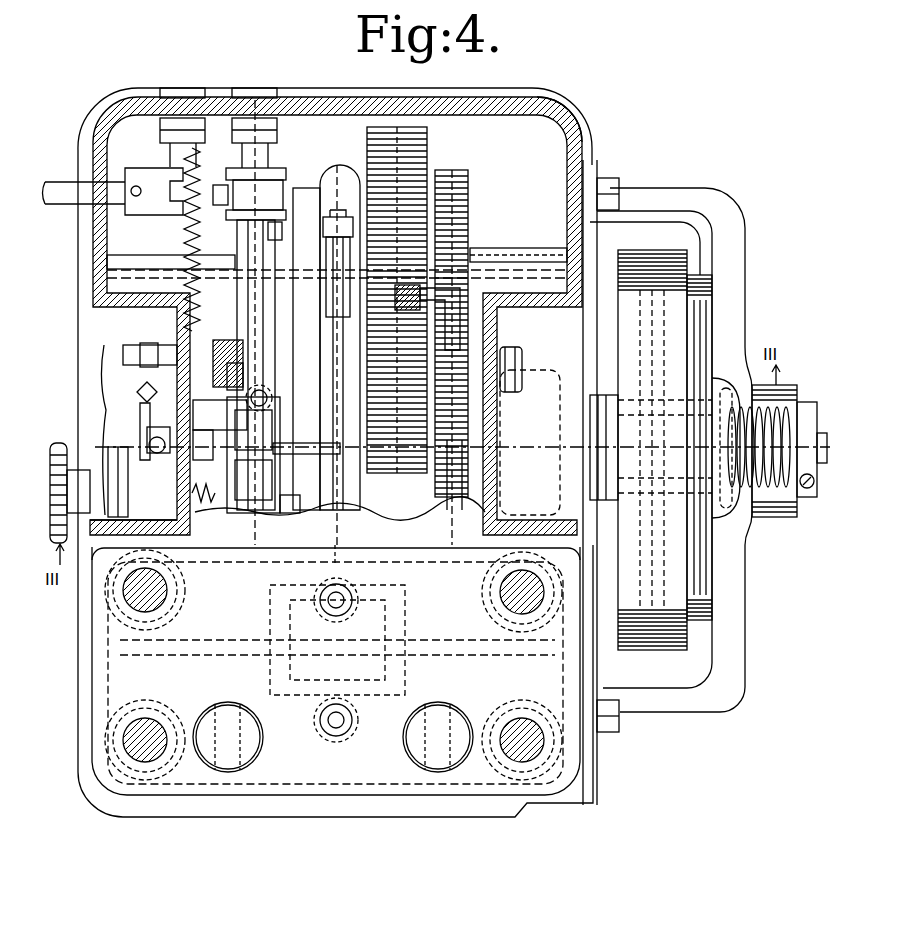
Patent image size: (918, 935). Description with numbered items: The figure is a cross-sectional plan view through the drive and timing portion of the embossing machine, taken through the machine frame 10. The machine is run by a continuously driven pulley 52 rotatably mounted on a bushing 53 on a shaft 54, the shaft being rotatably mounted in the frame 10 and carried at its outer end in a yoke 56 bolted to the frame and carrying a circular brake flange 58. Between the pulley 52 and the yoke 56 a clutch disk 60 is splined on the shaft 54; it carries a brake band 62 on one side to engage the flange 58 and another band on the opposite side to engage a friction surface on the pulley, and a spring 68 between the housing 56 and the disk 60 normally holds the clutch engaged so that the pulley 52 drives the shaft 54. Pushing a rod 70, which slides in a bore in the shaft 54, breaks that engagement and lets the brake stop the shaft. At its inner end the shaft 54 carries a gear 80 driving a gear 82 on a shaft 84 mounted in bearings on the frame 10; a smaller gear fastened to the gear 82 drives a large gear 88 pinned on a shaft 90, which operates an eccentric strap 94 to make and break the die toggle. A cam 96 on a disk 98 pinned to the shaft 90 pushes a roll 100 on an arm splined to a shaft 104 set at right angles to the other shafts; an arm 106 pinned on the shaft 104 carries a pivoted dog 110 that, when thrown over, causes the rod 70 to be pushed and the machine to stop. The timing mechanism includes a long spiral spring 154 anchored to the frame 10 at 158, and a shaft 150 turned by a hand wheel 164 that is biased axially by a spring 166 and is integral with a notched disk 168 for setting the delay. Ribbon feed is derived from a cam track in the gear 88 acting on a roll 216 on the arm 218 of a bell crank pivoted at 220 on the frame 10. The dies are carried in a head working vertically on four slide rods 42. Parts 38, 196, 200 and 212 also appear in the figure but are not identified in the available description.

The machine frame 10 is at (575, 135).
The openings in cover 38 is at (405, 757).
The slide rods 42 is at (158, 598).
The pulley 52 is at (642, 655).
The bushing 53 is at (633, 405).
The shaft 54 is at (822, 436).
The yoke 56 is at (732, 668).
The brake flange 58 is at (703, 325).
The clutch disk 60 is at (688, 325).
The brake band 62 is at (693, 340).
The spring 68 is at (773, 403).
The rod 70 is at (293, 455).
The gear 80 is at (455, 430).
The gear 82 is at (470, 198).
The shaft 84 is at (538, 282).
The large gear 88 is at (428, 158).
The shaft 90 is at (600, 287).
The eccentric strap 94 is at (353, 558).
The cam 96 is at (242, 382).
The disk 98 is at (207, 213).
The roll 100 is at (273, 235).
The shaft 104 is at (250, 283).
The arm 106 is at (220, 547).
The dog 110 is at (203, 452).
The shaft 150 is at (297, 513).
The spiral spring 154 is at (183, 235).
The spring anchorage 158 is at (208, 92).
The hand wheel 164 is at (58, 443).
The spring 166 is at (200, 507).
The notched disk 168 is at (118, 447).
The plunger 196 is at (300, 187).
The rod 200 is at (72, 187).
The collar 212 is at (233, 237).
The roll 216 is at (413, 297).
The arm 218 is at (432, 333).
The pivot 220 is at (522, 370).